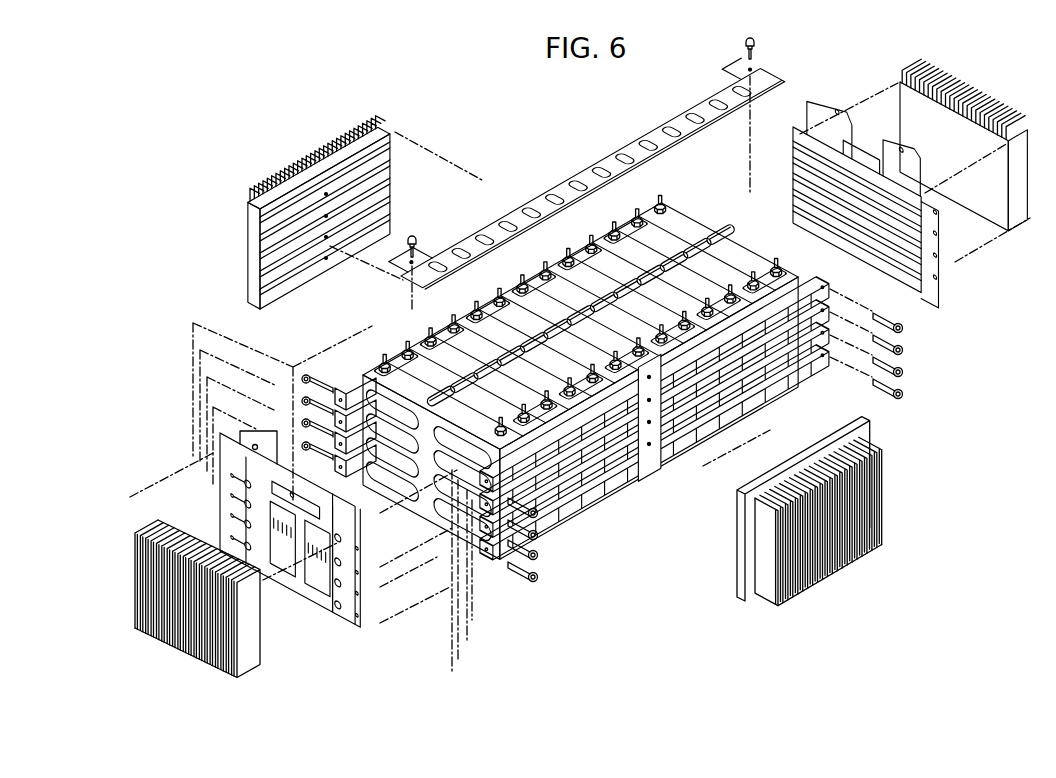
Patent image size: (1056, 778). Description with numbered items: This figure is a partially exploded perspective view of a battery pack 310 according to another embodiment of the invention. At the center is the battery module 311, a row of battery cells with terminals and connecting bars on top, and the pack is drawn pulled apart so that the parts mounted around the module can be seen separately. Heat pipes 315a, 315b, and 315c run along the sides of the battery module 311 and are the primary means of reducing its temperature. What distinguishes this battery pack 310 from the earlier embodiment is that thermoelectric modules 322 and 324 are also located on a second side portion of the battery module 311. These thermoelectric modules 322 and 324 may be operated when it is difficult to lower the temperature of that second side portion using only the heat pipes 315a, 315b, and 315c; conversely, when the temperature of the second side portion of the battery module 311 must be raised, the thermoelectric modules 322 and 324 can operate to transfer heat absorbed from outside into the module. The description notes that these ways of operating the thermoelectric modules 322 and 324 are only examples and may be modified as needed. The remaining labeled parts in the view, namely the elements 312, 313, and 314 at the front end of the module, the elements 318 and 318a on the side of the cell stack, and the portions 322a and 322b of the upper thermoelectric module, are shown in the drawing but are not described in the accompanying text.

The battery pack 310 is at (661, 675).
The battery module 311 is at (718, 214).
The end plate 312 is at (291, 578).
The end plate coupling portion 313 is at (316, 590).
The end heat sink 314 is at (245, 670).
The heat pipe 315a is at (572, 520).
The heat pipe 315b is at (731, 400).
The heat pipe 315c is at (347, 392).
The spacer 318 is at (641, 465).
The spacer coupling portion 318a is at (652, 450).
The thermoelectric module 322 is at (870, 425).
The heat dissipation plate rib 322a is at (385, 199).
The heat dissipation plate fin side 322b is at (310, 238).
The thermoelectric module 324 is at (881, 481).